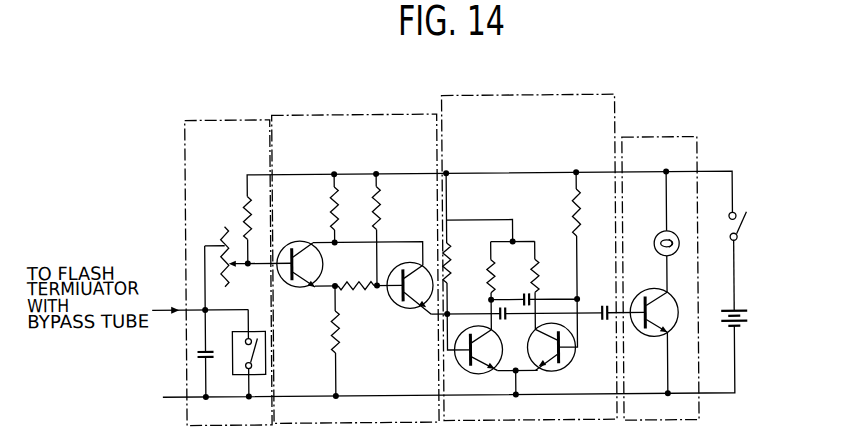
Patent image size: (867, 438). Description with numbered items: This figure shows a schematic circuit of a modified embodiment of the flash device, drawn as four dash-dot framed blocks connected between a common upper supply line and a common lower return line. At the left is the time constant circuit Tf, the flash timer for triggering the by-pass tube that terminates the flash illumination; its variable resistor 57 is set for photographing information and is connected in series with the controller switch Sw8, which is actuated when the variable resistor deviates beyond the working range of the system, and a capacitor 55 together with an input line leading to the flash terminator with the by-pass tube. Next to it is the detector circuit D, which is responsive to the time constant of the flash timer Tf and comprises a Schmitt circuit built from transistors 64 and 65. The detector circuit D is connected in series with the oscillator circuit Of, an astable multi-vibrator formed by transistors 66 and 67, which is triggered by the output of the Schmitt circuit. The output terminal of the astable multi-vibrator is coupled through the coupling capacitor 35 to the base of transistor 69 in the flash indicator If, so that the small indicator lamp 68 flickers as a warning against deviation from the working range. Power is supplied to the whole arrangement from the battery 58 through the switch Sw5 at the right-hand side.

The coupling capacitor 35 is at (603, 306).
The capacitor 55 is at (208, 360).
The variable resistor 57 is at (224, 230).
The battery 58 is at (746, 328).
The transistor 64 is at (291, 241).
The transistor 65 is at (395, 309).
The transistor 66 is at (461, 367).
The transistor 67 is at (569, 364).
The small indicator lamp 68 is at (657, 255).
The transistor 69 is at (676, 300).
The controller switch Sw8 is at (266, 347).
The switch Sw5 is at (741, 228).
The time constant circuit Tf is at (216, 132).
The detector circuit D is at (318, 132).
The oscillator circuit Of is at (516, 107).
The indicating lamp circuit If is at (669, 147).